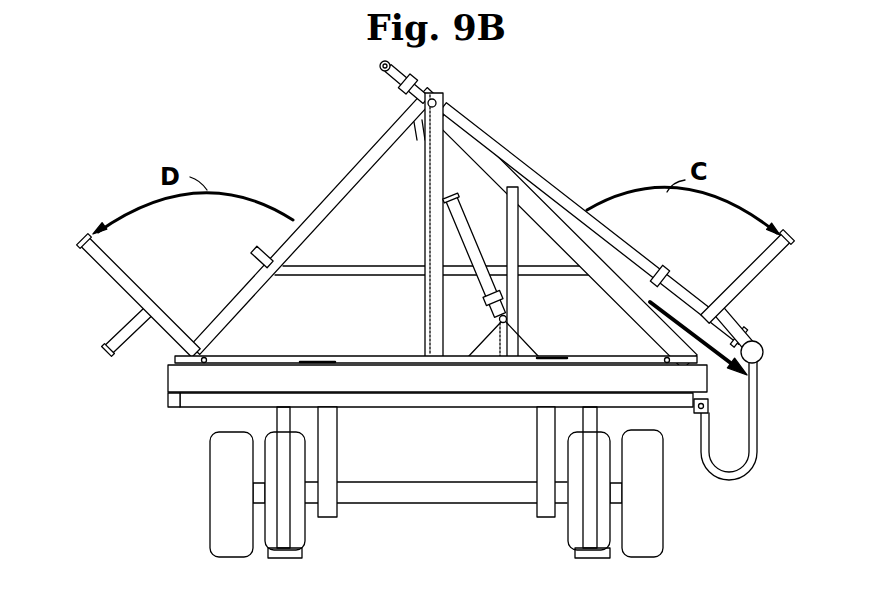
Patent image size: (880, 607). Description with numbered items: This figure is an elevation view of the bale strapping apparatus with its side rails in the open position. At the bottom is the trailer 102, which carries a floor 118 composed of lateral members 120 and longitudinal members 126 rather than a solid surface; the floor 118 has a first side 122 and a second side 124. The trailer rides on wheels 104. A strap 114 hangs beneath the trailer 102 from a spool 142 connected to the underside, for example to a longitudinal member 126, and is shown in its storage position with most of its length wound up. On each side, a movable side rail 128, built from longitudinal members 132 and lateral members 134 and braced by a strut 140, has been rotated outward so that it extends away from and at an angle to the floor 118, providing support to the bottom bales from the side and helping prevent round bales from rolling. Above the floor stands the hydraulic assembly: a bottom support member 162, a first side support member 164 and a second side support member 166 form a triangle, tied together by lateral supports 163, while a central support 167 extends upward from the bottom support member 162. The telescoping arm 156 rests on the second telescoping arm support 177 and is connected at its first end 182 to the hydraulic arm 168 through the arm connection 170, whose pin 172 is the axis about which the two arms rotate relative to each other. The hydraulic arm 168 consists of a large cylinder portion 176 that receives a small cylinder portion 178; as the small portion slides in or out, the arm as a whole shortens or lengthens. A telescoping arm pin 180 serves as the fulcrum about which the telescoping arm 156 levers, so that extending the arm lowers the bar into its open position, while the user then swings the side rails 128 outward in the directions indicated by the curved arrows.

The trailer 102 is at (421, 449).
The wheels 104 is at (222, 543).
The strap 114 is at (760, 424).
The floor 118 is at (764, 353).
The lateral members 120 is at (422, 408).
The first side 122 is at (683, 433).
The second side 124 is at (150, 371).
The longitudinal members 126 is at (168, 401).
The movable side rails 128 is at (452, 274).
The longitudinal members 132 is at (86, 236).
The lateral members 134 is at (127, 270).
The wing strut 140 is at (108, 351).
The spool 142 is at (700, 418).
The telescoping arm 156 is at (528, 170).
The bottom support member 162 is at (352, 363).
The lateral supports 163 is at (305, 278).
The first side support member 164 is at (466, 136).
The second side support member 166 is at (318, 214).
The central support 167 is at (432, 178).
The hydraulic arm 168 is at (458, 218).
The arm connection 170 is at (345, 64).
The pin 172 is at (393, 64).
The large cylinder portion 176 is at (482, 283).
The second telescoping arm support 177 is at (257, 253).
The small cylinder portion 178 is at (407, 110).
The telescoping arm pin 180 is at (440, 103).
The first end 182 is at (466, 71).